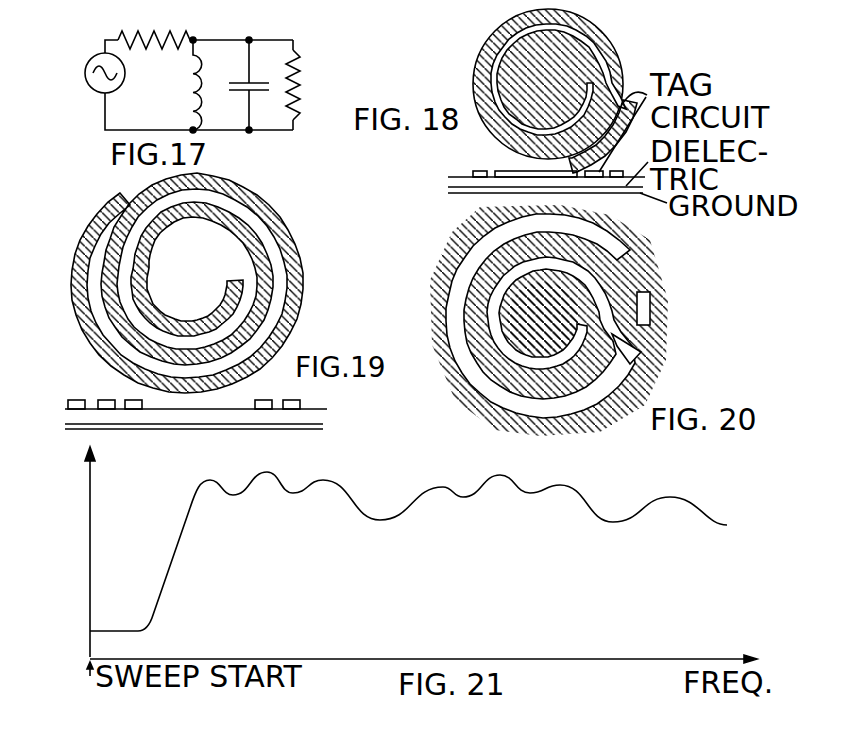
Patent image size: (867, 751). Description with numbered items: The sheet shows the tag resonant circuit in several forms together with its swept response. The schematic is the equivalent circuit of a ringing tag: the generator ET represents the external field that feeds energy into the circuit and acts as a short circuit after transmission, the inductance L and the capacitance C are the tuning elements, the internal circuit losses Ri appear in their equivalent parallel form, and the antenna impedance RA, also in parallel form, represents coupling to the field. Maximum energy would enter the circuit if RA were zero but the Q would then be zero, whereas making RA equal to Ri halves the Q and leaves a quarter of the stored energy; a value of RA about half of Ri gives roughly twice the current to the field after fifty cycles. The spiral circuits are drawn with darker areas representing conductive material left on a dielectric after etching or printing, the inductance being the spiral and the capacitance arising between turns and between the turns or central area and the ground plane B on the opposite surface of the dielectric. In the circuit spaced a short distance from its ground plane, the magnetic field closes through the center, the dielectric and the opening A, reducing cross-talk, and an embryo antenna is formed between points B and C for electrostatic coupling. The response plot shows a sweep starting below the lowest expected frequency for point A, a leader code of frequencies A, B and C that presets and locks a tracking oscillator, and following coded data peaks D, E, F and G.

In FIG. 17, the generator voltage ET is at (82, 67).
In FIG. 17, the antenna impedance RA is at (155, 24).
In FIG. 17, the inductance L is at (181, 85).
In FIG. 17, the capacitance C is at (244, 85).
In FIG. 20, the capacitance C is at (537, 318).
In FIG. 21, the capacitance C is at (336, 484).
In FIG. 17, the internal circuit losses Ri is at (309, 83).
In FIG. 18, the opening A is at (537, 91).
In FIG. 19, the opening A is at (205, 283).
In FIG. 20, the opening A is at (612, 250).
In FIG. 21, the opening A is at (211, 479).
In FIG. 18, the point B is at (541, 167).
In FIG. 19, the point B is at (205, 411).
In FIG. 20, the point B is at (630, 335).
In FIG. 21, the point B is at (263, 469).
In FIG. 21, the coded data frequency D is at (421, 486).
In FIG. 21, the coded data frequency E is at (496, 471).
In FIG. 21, the coded data frequency F is at (571, 489).
In FIG. 21, the coded data frequency G is at (670, 493).